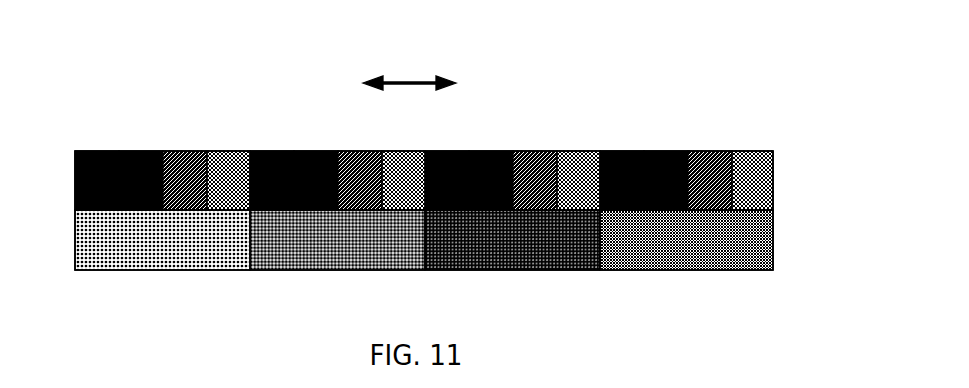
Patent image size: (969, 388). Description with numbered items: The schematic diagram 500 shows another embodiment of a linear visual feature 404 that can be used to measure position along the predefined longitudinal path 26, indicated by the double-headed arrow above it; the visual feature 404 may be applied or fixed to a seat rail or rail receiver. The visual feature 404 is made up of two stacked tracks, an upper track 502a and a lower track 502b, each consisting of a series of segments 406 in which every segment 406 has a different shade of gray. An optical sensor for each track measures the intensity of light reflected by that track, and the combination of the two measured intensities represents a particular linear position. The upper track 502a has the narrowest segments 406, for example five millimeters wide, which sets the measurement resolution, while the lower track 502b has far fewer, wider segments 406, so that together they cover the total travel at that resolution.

The predefined longitudinal path 26 is at (405, 72).
The visual feature 404 is at (431, 207).
The segments 406 is at (97, 143).
The schematic diagram 500 is at (414, 167).
The first track 502a is at (67, 167).
The second track 502b is at (78, 230).